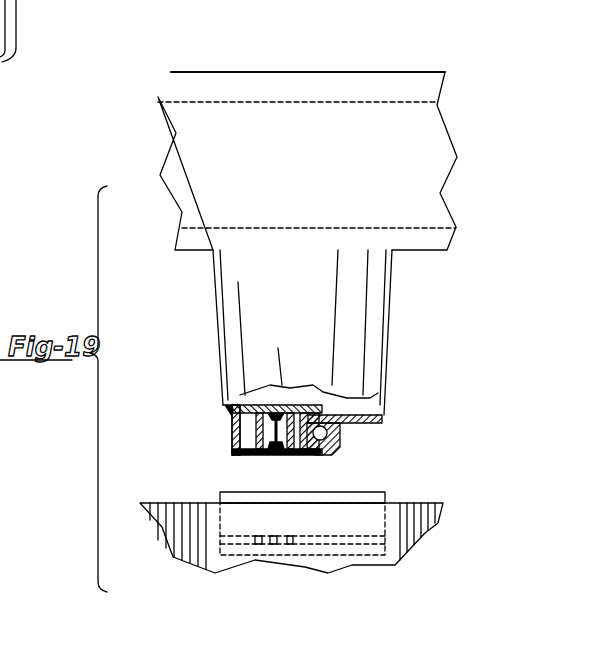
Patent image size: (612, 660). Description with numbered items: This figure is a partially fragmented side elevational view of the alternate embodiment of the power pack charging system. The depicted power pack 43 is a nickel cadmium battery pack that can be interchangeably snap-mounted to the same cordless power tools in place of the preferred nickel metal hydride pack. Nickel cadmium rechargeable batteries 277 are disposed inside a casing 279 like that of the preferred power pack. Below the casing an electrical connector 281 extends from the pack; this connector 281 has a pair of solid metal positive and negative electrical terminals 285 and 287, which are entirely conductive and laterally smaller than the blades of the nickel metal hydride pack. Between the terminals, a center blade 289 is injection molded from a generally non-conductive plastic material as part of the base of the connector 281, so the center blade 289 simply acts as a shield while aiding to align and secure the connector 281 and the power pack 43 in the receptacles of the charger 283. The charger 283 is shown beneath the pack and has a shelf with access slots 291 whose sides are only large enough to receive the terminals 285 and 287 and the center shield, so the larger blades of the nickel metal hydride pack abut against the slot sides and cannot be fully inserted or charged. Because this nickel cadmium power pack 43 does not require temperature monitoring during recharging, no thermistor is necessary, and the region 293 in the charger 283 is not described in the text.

The power pack 43 is at (290, 90).
The casing 279 is at (390, 72).
The nickel cadmium rechargeable batteries 277 is at (347, 185).
The electrical connector 281 is at (265, 412).
The positive electrical terminal 285 is at (233, 433).
The negative electrical terminal 287 is at (340, 422).
The center blade 289 is at (289, 446).
The charger 283 is at (190, 518).
The access slots 291 is at (260, 545).
The cavity insert 293 is at (362, 538).